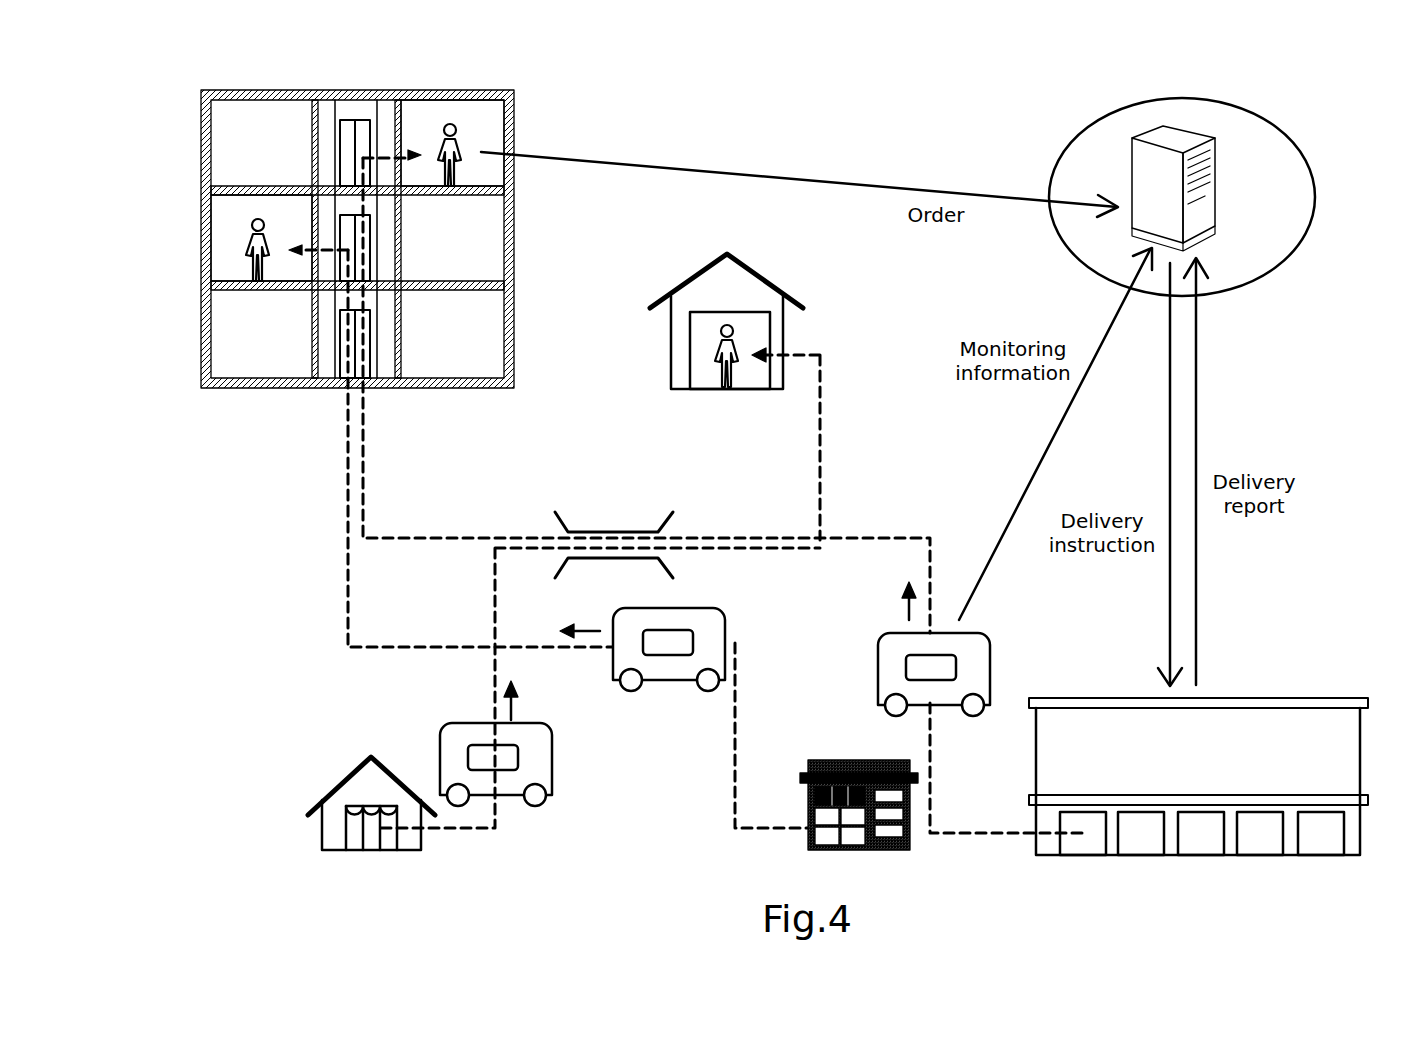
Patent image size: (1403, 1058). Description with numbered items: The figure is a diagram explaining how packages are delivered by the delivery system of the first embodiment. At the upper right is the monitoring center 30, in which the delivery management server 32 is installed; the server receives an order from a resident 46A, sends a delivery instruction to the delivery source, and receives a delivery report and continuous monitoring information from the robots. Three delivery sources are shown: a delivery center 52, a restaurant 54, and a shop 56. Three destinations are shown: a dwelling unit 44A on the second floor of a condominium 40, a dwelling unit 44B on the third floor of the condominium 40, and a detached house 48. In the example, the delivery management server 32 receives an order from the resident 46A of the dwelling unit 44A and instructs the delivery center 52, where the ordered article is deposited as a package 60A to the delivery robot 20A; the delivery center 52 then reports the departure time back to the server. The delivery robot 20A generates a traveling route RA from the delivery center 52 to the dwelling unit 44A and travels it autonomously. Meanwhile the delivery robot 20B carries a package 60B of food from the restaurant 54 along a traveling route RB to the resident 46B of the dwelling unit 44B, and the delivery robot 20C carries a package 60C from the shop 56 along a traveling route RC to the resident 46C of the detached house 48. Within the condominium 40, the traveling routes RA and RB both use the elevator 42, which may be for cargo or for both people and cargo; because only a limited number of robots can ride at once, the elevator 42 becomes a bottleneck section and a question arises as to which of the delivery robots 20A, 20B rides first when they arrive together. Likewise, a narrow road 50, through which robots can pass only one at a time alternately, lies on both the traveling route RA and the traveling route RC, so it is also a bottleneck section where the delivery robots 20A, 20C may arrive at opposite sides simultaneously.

The delivery robot 20A is at (876, 667).
The delivery robot 20B is at (727, 612).
The delivery robot 20C is at (552, 756).
The monitoring center 30 is at (1206, 100).
The delivery management server 32 is at (1130, 185).
The condominium 40 is at (471, 62).
The elevator 42 is at (378, 120).
The dwelling unit 44A is at (510, 138).
The dwelling unit 44B is at (228, 268).
The resident 46A is at (462, 136).
The resident 46B is at (244, 236).
The resident 46C is at (736, 340).
The detached house 48 is at (698, 270).
The narrow road 50 is at (597, 528).
The delivery center 52 is at (1300, 697).
The restaurant 54 is at (826, 760).
The shop 56 is at (340, 775).
The package 60A is at (960, 668).
The package 60B is at (660, 630).
The package 60C is at (478, 745).
The traveling route RA is at (411, 535).
The traveling route RB is at (347, 590).
The traveling route RC is at (822, 425).